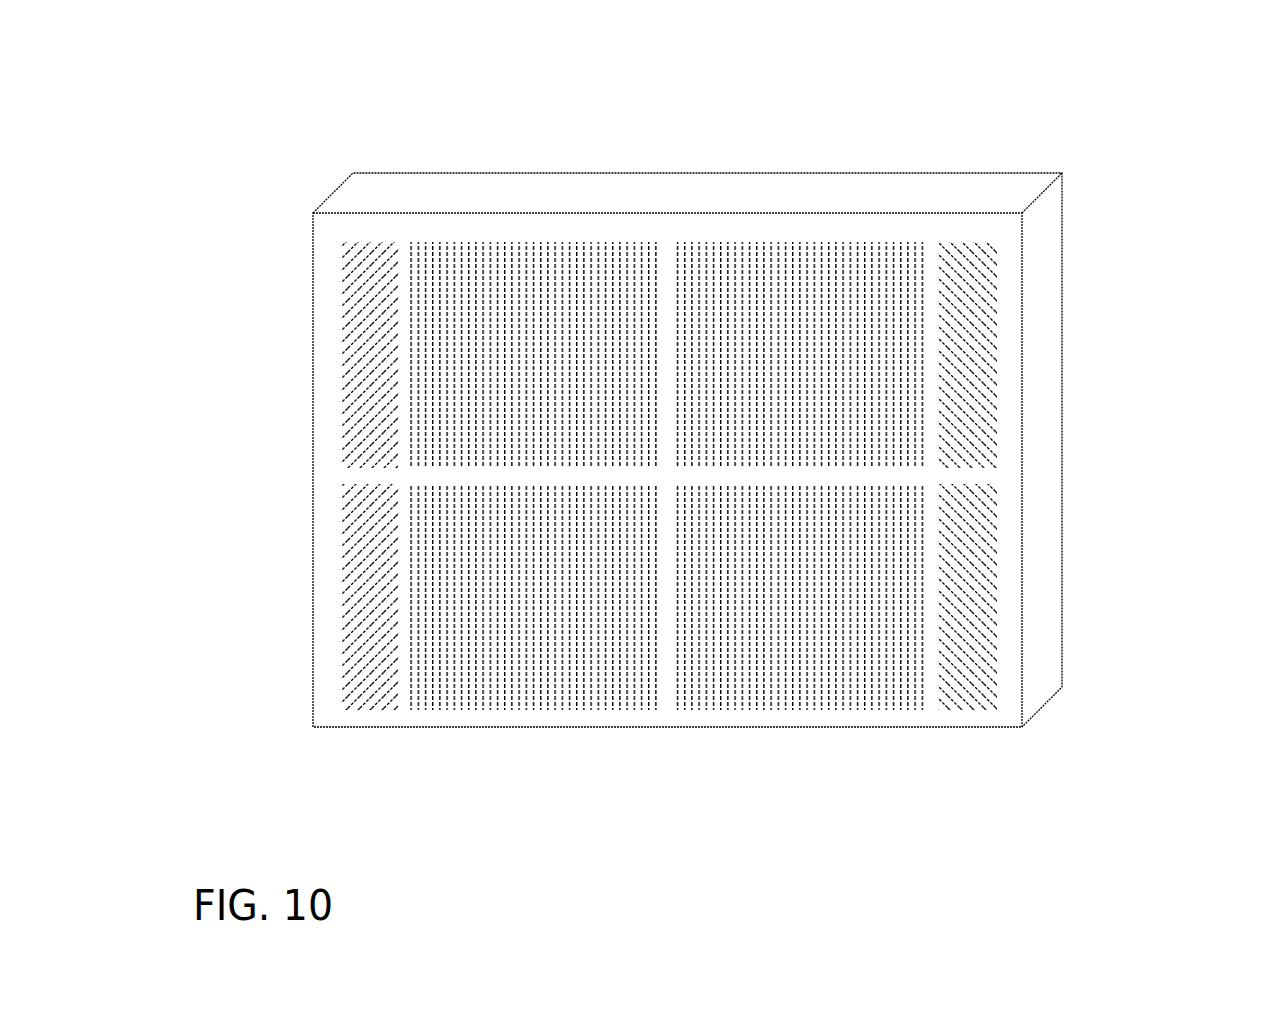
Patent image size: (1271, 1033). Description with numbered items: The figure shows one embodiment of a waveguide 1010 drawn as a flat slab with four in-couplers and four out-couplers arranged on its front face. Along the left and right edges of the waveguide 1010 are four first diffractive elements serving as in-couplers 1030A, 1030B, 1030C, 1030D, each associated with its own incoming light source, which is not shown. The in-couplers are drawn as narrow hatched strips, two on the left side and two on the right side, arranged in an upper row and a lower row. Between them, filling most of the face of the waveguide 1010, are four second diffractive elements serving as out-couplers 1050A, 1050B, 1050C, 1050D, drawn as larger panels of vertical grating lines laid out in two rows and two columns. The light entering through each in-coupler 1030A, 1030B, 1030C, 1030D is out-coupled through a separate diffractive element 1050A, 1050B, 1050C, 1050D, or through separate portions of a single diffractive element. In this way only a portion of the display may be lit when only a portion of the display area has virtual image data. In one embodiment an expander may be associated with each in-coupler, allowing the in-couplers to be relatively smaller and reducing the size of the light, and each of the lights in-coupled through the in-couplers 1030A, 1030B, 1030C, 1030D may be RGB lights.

The waveguide 1010 is at (327, 170).
The in-coupler 1030A is at (318, 318).
The in-coupler 1030B is at (330, 602).
The in-coupler 1030C is at (1006, 312).
The in-coupler 1030D is at (1018, 604).
The diffractive element 1050A is at (528, 238).
The diffractive element 1050B is at (544, 706).
The diffractive element 1050C is at (816, 238).
The diffractive element 1050D is at (849, 698).